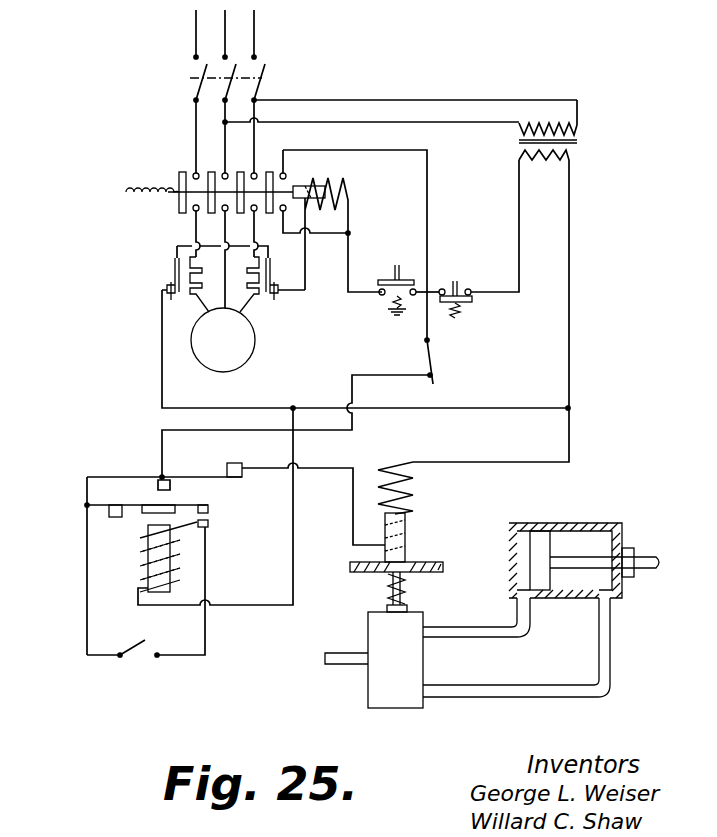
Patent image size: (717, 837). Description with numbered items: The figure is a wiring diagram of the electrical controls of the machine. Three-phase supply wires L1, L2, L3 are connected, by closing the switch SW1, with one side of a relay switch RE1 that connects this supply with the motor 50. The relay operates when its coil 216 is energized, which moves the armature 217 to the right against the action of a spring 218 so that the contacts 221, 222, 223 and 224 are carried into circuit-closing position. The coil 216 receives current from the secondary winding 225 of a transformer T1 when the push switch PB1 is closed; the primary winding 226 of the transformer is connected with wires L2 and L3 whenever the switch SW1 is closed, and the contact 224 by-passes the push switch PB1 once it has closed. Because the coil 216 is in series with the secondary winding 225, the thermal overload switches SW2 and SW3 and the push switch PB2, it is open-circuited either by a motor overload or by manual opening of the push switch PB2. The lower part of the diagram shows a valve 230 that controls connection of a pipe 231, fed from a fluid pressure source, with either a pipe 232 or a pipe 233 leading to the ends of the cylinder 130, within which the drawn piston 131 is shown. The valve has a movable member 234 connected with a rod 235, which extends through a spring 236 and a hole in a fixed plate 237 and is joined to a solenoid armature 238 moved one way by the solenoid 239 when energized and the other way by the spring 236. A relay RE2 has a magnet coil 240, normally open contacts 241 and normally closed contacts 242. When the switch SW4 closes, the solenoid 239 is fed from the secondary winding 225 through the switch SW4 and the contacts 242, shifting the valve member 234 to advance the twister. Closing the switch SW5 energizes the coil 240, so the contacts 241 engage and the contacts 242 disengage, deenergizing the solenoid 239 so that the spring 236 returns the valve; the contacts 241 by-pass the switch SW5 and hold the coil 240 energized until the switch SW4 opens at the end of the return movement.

The supply wire L1 is at (195, 24).
The supply wire L2 is at (225, 24).
The supply wire L3 is at (254, 24).
The switch SW1 is at (193, 80).
The relay switch RE1 is at (176, 210).
The spring 218 is at (147, 179).
The contact 221 is at (180, 172).
The contact 222 is at (208, 172).
The contact 223 is at (239, 172).
The contact 224 is at (268, 172).
The armature 217 is at (302, 186).
The coil 216 is at (343, 188).
The transformer T1 is at (514, 145).
The primary winding 226 is at (578, 130).
The secondary winding 225 is at (573, 157).
The push switch PB1 is at (400, 260).
The push switch PB2 is at (454, 281).
The thermal overload switch SW2 is at (173, 277).
The thermal overload switch SW3 is at (273, 296).
The motor 50 is at (258, 345).
The switch SW4 is at (437, 357).
The relay RE2 is at (62, 576).
The normally closed contacts 242 is at (226, 470).
The normally open contacts 241 is at (208, 524).
The magnet coil 240 is at (146, 561).
The switch SW5 is at (137, 651).
The solenoid 239 is at (413, 497).
The solenoid armature 238 is at (405, 540).
The fixed plate 237 is at (425, 562).
The spring 236 is at (392, 591).
The rod 235 is at (405, 588).
The movable member 234 is at (407, 612).
The valve 230 is at (398, 708).
The pipe 231 is at (335, 666).
The pipe 233 is at (475, 637).
The pipe 232 is at (530, 697).
The cylinder 130 is at (605, 523).
The piston 131 is at (540, 531).